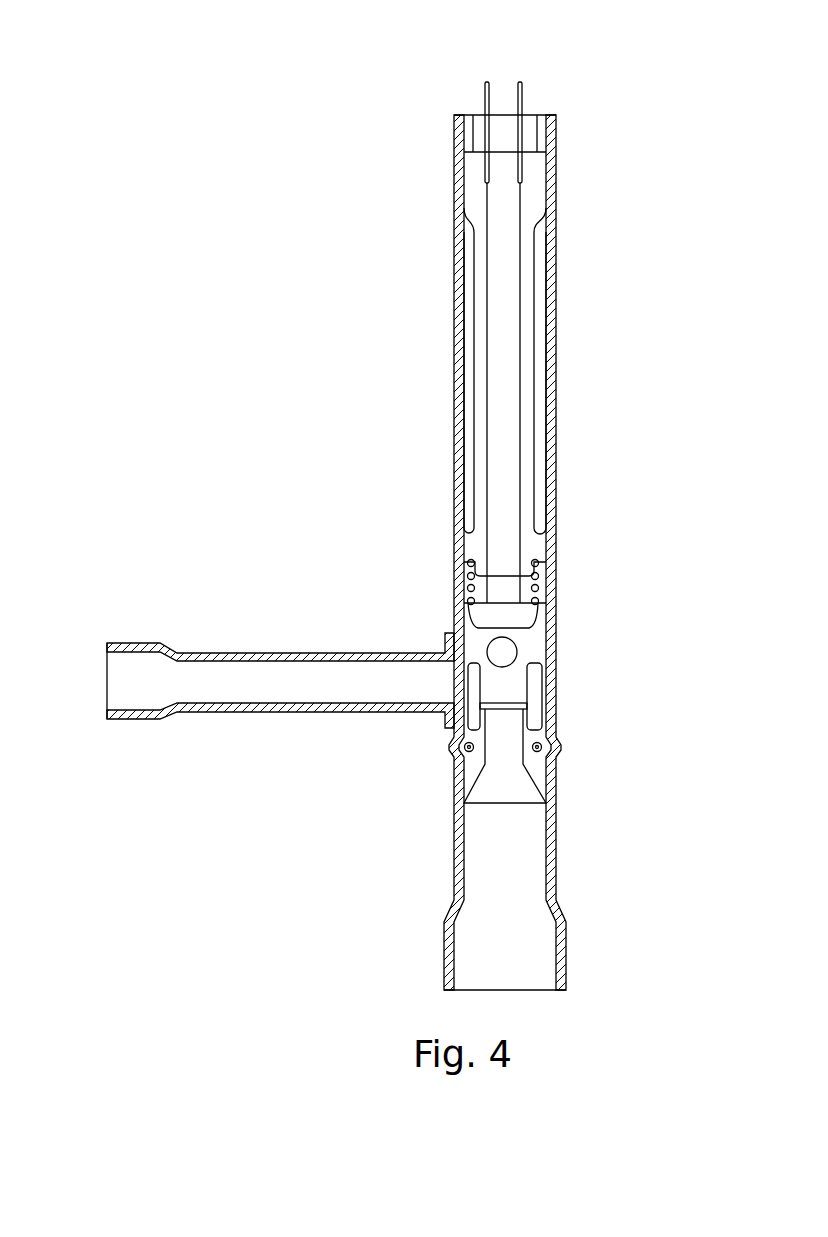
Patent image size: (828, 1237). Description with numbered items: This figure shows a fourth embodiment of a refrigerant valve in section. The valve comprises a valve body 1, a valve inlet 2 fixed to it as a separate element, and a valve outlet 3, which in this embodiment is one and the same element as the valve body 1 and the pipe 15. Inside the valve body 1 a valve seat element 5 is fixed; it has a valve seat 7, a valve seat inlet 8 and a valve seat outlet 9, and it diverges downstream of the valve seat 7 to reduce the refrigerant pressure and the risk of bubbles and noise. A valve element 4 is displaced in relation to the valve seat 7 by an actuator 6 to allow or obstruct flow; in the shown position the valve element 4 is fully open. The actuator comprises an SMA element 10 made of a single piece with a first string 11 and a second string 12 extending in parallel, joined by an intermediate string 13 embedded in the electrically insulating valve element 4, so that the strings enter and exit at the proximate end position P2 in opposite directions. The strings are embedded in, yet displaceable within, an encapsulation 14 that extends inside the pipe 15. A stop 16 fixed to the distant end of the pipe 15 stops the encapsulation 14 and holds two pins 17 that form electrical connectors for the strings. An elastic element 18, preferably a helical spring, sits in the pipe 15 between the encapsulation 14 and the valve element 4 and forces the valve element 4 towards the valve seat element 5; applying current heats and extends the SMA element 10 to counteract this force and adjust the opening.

The valve body 1 is at (548, 620).
The valve inlet 2 is at (208, 665).
The valve outlet 3 is at (530, 880).
The valve element 4 is at (520, 675).
The valve seat element 5 is at (533, 772).
The actuator 6 is at (452, 334).
The valve seat 7 is at (532, 713).
The valve seat inlet 8 is at (462, 680).
The valve seat outlet 9 is at (497, 757).
The SMA element 10 is at (485, 287).
The first string 11 is at (485, 385).
The second string 12 is at (520, 395).
The intermediate string 13 is at (458, 628).
The encapsulation 14 is at (525, 272).
The pipe 15 is at (548, 326).
The stop 16 is at (538, 134).
The pins 17 is at (487, 82).
The elastic element 18 is at (545, 578).
The proximate end position P2 is at (452, 142).